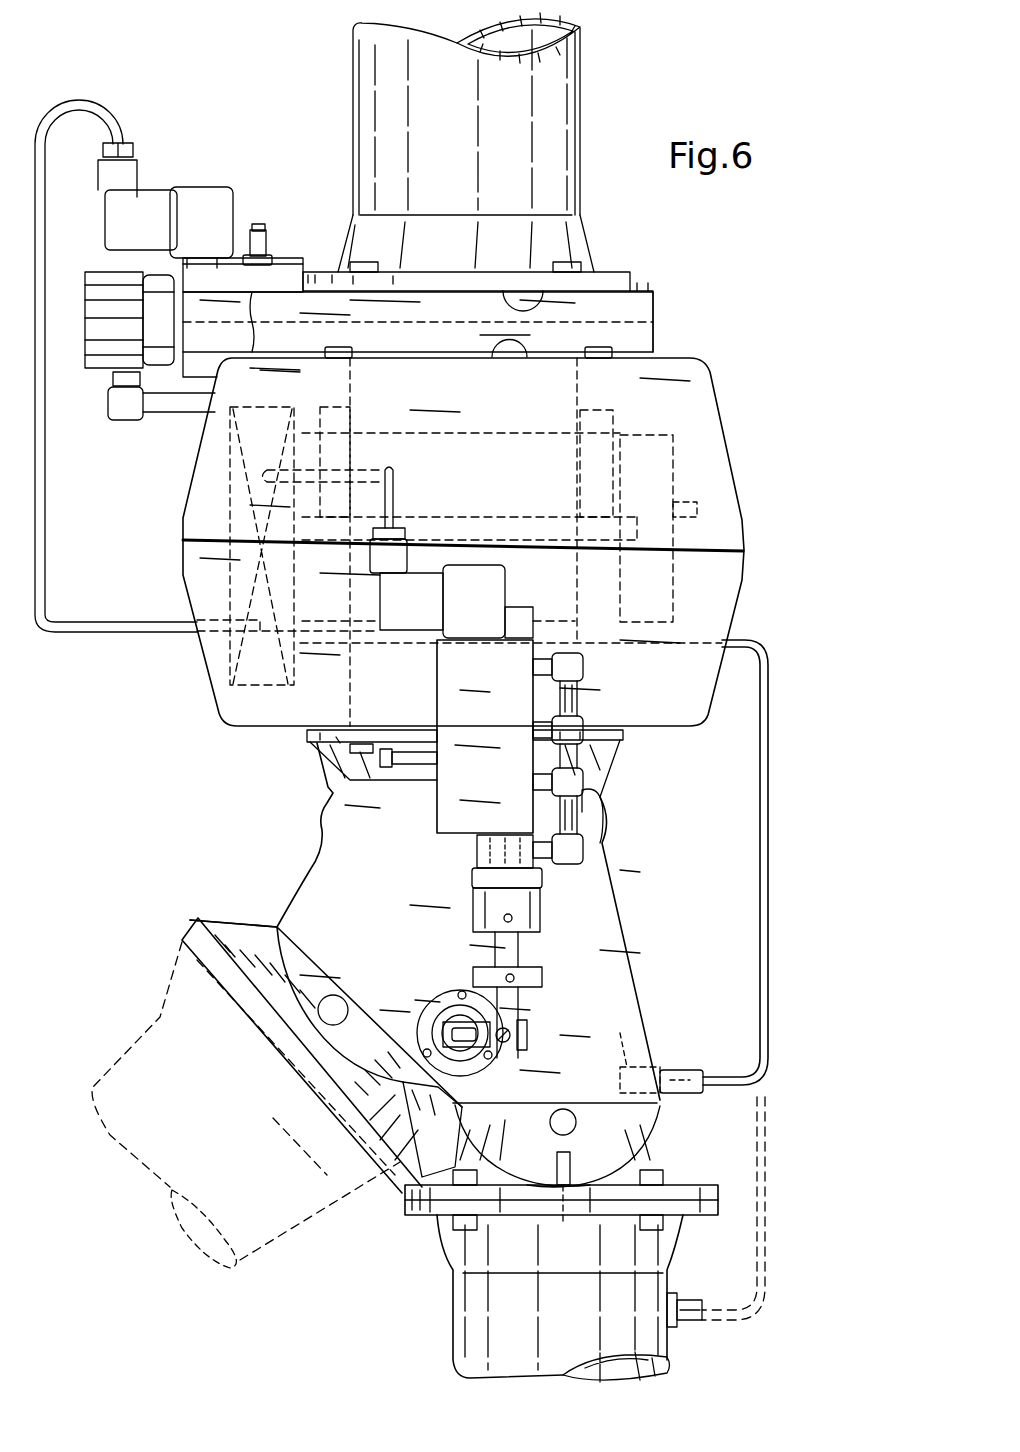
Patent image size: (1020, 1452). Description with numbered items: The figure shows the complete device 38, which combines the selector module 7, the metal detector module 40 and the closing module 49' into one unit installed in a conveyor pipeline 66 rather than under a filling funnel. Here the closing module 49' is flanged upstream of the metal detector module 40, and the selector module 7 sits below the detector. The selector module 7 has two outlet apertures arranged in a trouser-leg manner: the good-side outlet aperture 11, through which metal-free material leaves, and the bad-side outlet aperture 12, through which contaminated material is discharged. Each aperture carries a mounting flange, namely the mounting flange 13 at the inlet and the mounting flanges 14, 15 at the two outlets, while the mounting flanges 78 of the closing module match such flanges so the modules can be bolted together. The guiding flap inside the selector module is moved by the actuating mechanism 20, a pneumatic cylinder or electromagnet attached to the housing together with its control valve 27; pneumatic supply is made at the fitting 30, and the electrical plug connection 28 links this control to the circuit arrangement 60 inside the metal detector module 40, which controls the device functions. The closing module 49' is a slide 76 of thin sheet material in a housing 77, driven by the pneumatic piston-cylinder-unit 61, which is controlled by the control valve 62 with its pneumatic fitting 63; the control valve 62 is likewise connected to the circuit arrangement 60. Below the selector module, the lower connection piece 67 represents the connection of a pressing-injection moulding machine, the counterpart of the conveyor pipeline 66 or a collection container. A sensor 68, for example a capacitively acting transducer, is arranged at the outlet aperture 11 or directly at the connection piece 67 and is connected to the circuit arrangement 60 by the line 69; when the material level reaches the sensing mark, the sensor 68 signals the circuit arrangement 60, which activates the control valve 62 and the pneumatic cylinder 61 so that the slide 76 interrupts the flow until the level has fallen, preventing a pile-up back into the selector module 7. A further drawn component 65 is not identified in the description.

The selector module 7 is at (615, 990).
The outlet aperture 11 is at (562, 1225).
The outlet aperture 12 is at (276, 1112).
The mounting flange 13 is at (320, 745).
The mounting flange 14 is at (242, 987).
The mounting flange 15 is at (430, 1215).
The actuating mechanism 20 is at (540, 867).
The control valve 27 is at (583, 760).
The electrical plug connection 28 is at (493, 585).
The fitting 30 is at (410, 782).
The device 38 is at (786, 348).
The metal detector module 40 is at (735, 438).
The closing module 49' is at (459, 316).
The circuit arrangement 60 is at (240, 580).
The pneumatic piston-cylinder-unit 61 is at (105, 342).
The control valve 62 is at (205, 275).
The fitting 63 is at (266, 240).
The switch 65 is at (697, 510).
The conveyor pipeline 66 is at (378, 82).
The lower connection piece 67 is at (477, 1305).
The sensor 68 is at (687, 1072).
The line 69 is at (762, 850).
The slide 76 is at (577, 323).
The housing 77 is at (666, 340).
The mounting flanges 78 is at (493, 347).